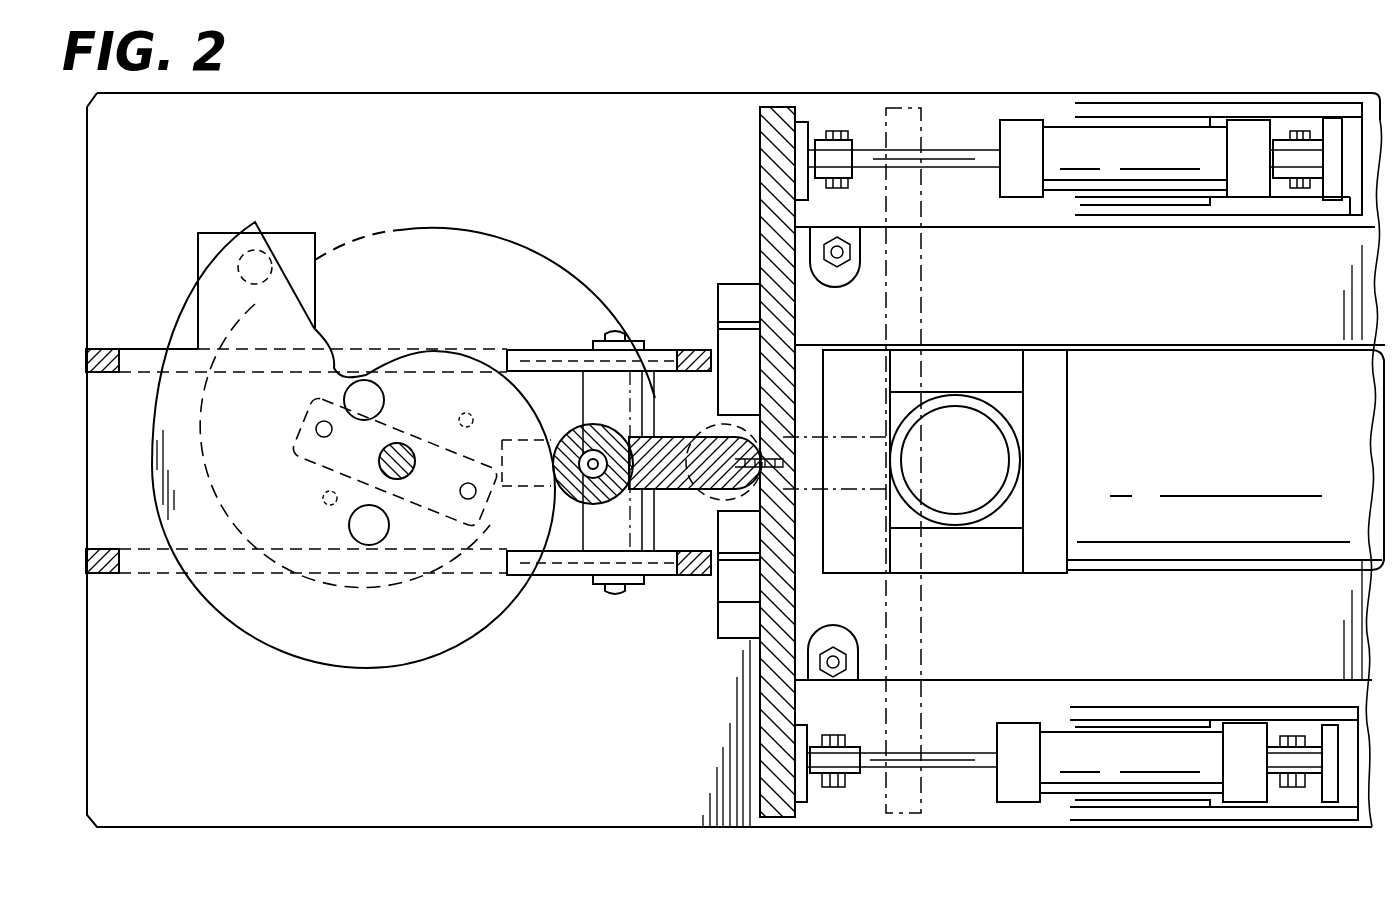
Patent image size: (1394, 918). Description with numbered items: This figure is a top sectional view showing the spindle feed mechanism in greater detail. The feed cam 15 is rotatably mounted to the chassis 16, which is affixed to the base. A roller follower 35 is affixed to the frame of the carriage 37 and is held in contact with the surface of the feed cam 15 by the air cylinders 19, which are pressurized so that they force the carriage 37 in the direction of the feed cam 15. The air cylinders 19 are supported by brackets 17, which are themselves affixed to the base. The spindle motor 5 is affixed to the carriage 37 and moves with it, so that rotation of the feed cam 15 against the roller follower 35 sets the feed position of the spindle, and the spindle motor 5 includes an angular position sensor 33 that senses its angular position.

The spindle motor 5 is at (1217, 362).
The feed cam 15 is at (171, 322).
The chassis 16 is at (268, 733).
The brackets 17 is at (1243, 127).
The air cylinders 19 is at (1143, 133).
The angular position sensor 33 is at (857, 358).
The roller follower 35 is at (598, 492).
The carriage 37 is at (760, 178).